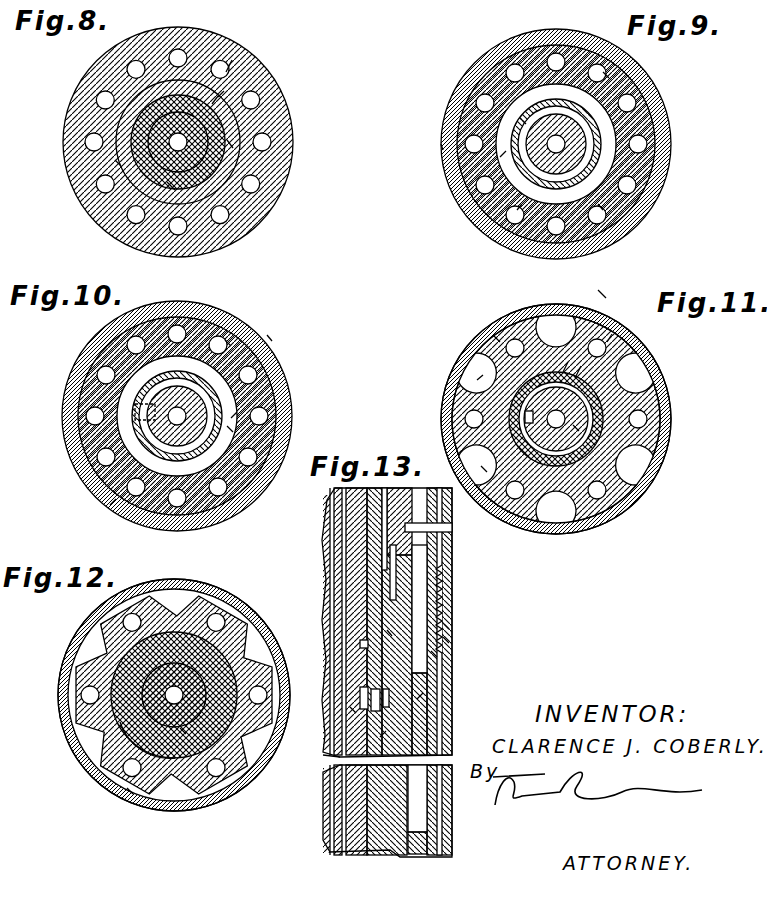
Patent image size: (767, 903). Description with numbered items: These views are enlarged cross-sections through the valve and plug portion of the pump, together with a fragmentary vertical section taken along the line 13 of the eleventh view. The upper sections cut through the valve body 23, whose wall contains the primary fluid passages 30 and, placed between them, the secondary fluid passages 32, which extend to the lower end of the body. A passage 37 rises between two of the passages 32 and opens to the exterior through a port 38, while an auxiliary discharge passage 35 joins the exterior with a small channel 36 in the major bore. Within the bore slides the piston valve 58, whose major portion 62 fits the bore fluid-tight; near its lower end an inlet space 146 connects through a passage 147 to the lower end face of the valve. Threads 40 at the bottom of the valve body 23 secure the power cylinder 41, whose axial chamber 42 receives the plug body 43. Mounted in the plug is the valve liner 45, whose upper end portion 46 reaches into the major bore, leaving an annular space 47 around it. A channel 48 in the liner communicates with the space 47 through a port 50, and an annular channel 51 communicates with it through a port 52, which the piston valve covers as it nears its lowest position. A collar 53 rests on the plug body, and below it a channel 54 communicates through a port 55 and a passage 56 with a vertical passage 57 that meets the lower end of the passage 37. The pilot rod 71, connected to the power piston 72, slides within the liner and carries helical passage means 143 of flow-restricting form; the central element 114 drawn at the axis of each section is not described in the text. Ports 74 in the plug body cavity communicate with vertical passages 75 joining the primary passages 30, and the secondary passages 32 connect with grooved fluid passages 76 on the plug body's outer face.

In FIG. 11, the section line 13 is at (605, 297).
In FIG. 8, the valve body 23 is at (277, 193).
In FIG. 9, the valve body 23 is at (493, 80).
In FIG. 10, the valve body 23 is at (87, 455).
In FIG. 8, the primary fluid passages 30 is at (134, 62).
In FIG. 9, the primary fluid passages 30 is at (512, 66).
In FIG. 10, the primary fluid passages 30 is at (128, 338).
In FIG. 8, the secondary fluid passages 32 is at (173, 50).
In FIG. 9, the secondary fluid passages 32 is at (550, 268).
In FIG. 10, the secondary fluid passages 32 is at (180, 326).
In FIG. 13, the auxiliary discharge passage 35 is at (418, 495).
In FIG. 13, the small channel 36 is at (343, 522).
In FIG. 8, the passage 37 is at (218, 96).
In FIG. 9, the passage 37 is at (603, 72).
In FIG. 10, the passage 37 is at (225, 340).
In FIG. 13, the passage 37 is at (418, 587).
In FIG. 8, the port 38 is at (232, 60).
In FIG. 13, the port 38 is at (452, 537).
In FIG. 9, the threads 40 is at (458, 92).
In FIG. 10, the threads 40 is at (267, 335).
In FIG. 13, the threads 40 is at (443, 623).
In FIG. 9, the power cylinder 41 is at (668, 132).
In FIG. 10, the power cylinder 41 is at (278, 385).
In FIG. 11, the power cylinder 41 is at (660, 468).
In FIG. 12, the power cylinder 41 is at (243, 598).
In FIG. 13, the power cylinder 41 is at (443, 637).
In FIG. 11, the axial chamber 42 is at (667, 425).
In FIG. 12, the axial chamber 42 is at (95, 638).
In FIG. 13, the axial chamber 42 is at (437, 810).
In FIG. 11, the plug body 43 is at (570, 525).
In FIG. 12, the plug body 43 is at (127, 788).
In FIG. 13, the plug body 43 is at (410, 847).
In FIG. 11, the valve liner 45 is at (500, 342).
In FIG. 13, the valve liner 45 is at (370, 787).
In FIG. 8, the upper end portion 46 is at (147, 110).
In FIG. 9, the upper end portion 46 is at (593, 186).
In FIG. 10, the upper end portion 46 is at (130, 402).
In FIG. 13, the upper end portion 46 is at (370, 547).
In FIG. 13, the annular space 47 is at (440, 612).
In FIG. 9, the channel 48 is at (517, 210).
In FIG. 13, the channel 48 is at (370, 600).
In FIG. 9, the port 50 is at (500, 157).
In FIG. 10, the annular channel 51 is at (110, 505).
In FIG. 13, the annular channel 51 is at (363, 687).
In FIG. 10, the port 52 is at (237, 412).
In FIG. 13, the port 52 is at (387, 630).
In FIG. 9, the collar 53 is at (603, 210).
In FIG. 10, the collar 53 is at (233, 432).
In FIG. 13, the collar 53 is at (371, 695).
In FIG. 11, the channel 54 is at (597, 422).
In FIG. 13, the channel 54 is at (380, 737).
In FIG. 11, the port 55 is at (563, 372).
In FIG. 13, the port 55 is at (423, 693).
In FIG. 11, the passage 56 is at (575, 378).
In FIG. 13, the passage 56 is at (437, 657).
In FIG. 11, the vertical passage 57 is at (607, 342).
In FIG. 13, the vertical passage 57 is at (427, 673).
In FIG. 8, the piston valve 58 is at (218, 97).
In FIG. 13, the piston valve 58 is at (393, 550).
In FIG. 8, the major portion 62 is at (115, 160).
In FIG. 8, the pilot rod 71 is at (167, 182).
In FIG. 9, the pilot rod 71 is at (600, 163).
In FIG. 10, the pilot rod 71 is at (183, 445).
In FIG. 11, the pilot rod 71 is at (573, 425).
In FIG. 12, the pilot rod 71 is at (180, 728).
In FIG. 13, the pilot rod 71 is at (323, 755).
In FIG. 12, the power piston 72 is at (133, 722).
In FIG. 12, the ports 74 is at (110, 680).
In FIG. 13, the ports 74 is at (360, 643).
In FIG. 11, the vertical passages 75 is at (510, 340).
In FIG. 12, the vertical passages 75 is at (135, 613).
In FIG. 11, the fluid passages 76 is at (483, 375).
In FIG. 12, the fluid passages 76 is at (168, 612).
In FIG. 8, the shaft 114 is at (218, 218).
In FIG. 9, the shaft 114 is at (558, 140).
In FIG. 10, the shaft 114 is at (178, 410).
In FIG. 11, the shaft 114 is at (547, 419).
In FIG. 12, the shaft 114 is at (165, 690).
In FIG. 10, the passage means 143 is at (77, 442).
In FIG. 11, the passage means 143 is at (527, 412).
In FIG. 13, the passage means 143 is at (350, 707).
In FIG. 8, the inlet space 146 is at (132, 130).
In FIG. 9, the inlet space 146 is at (514, 62).
In FIG. 8, the passage 147 is at (227, 140).